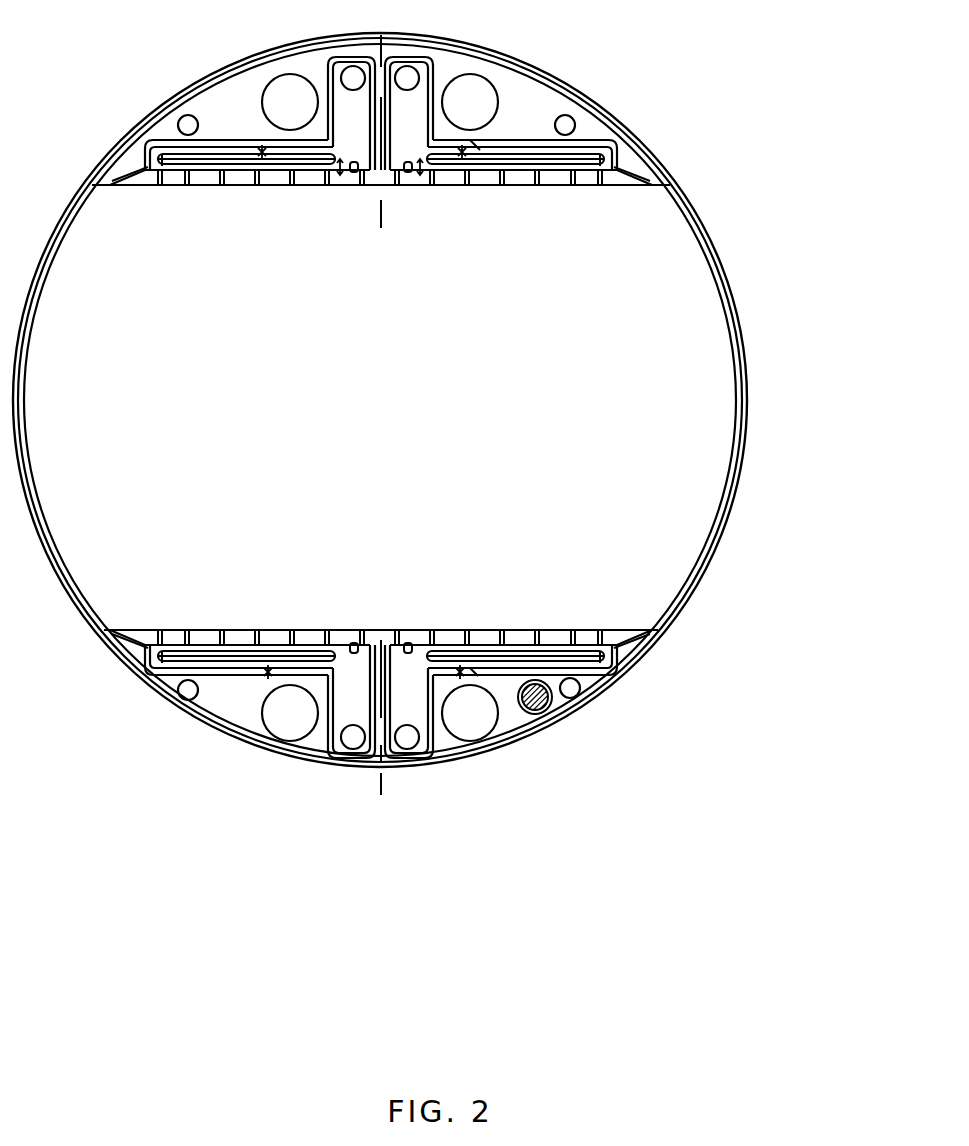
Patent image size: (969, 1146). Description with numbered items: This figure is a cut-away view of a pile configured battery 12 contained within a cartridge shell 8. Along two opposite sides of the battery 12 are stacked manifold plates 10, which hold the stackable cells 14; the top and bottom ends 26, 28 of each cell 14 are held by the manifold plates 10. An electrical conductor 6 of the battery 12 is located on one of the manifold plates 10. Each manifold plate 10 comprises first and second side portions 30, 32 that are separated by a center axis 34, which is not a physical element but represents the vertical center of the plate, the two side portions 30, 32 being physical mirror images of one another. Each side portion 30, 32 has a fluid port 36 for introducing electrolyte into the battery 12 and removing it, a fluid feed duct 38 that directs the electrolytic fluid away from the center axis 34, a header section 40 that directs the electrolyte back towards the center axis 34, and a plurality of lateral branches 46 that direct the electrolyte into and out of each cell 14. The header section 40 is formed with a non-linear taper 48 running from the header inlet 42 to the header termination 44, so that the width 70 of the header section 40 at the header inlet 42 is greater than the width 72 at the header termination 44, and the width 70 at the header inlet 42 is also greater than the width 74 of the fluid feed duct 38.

The electrical conductor 6 is at (552, 693).
The cartridge shell 8 is at (748, 445).
The manifold plate 10 is at (408, 113).
The pile configured battery 12 is at (218, 792).
The stackable cell 14 is at (580, 358).
The top end 26 is at (277, 188).
The bottom end 28 is at (275, 628).
The first side portion 30 is at (245, 140).
The second side portion 32 is at (480, 150).
The center axis 34 is at (387, 421).
The fluid port 36 is at (340, 72).
The fluid feed duct 38 is at (207, 152).
The header section 40 is at (183, 167).
The header inlet 42 is at (157, 160).
The header termination 44 is at (354, 176).
The lateral branch 46 is at (327, 190).
The non-linear taper 48 is at (233, 160).
The width of the header section at the header inlet 70 is at (140, 183).
The width of the header section at the header termination 72 is at (341, 160).
The width of the fluid feed duct 74 is at (262, 146).